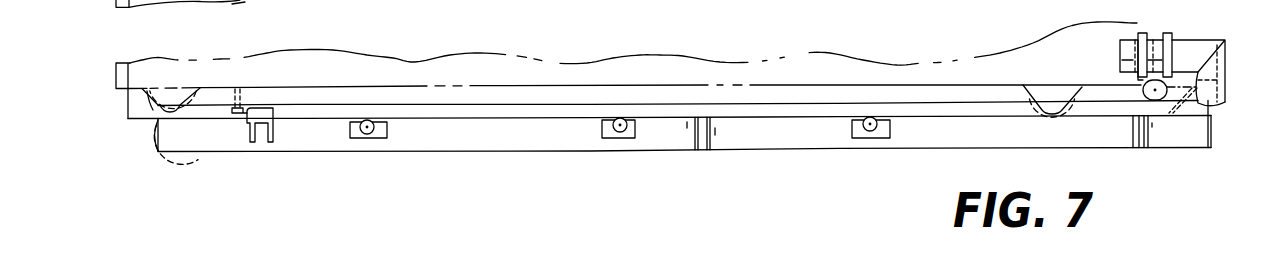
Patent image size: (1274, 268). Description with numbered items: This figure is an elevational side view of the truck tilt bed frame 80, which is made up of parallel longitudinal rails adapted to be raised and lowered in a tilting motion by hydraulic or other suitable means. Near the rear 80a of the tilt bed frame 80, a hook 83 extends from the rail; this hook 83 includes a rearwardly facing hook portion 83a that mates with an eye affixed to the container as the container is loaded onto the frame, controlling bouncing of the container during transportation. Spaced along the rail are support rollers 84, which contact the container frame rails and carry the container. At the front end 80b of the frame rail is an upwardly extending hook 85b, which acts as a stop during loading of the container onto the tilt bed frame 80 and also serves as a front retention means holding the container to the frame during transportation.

The tilt bed frame 80 is at (511, 173).
The rear of the tilt bed frame 80a is at (225, 155).
The front end of the tilt bed frame 80b is at (1188, 133).
The hook 83 is at (267, 108).
The rearwardly facing hook portion 83a is at (242, 108).
The support roller 84 is at (385, 136).
The upwardly extending hook 85b is at (1180, 72).